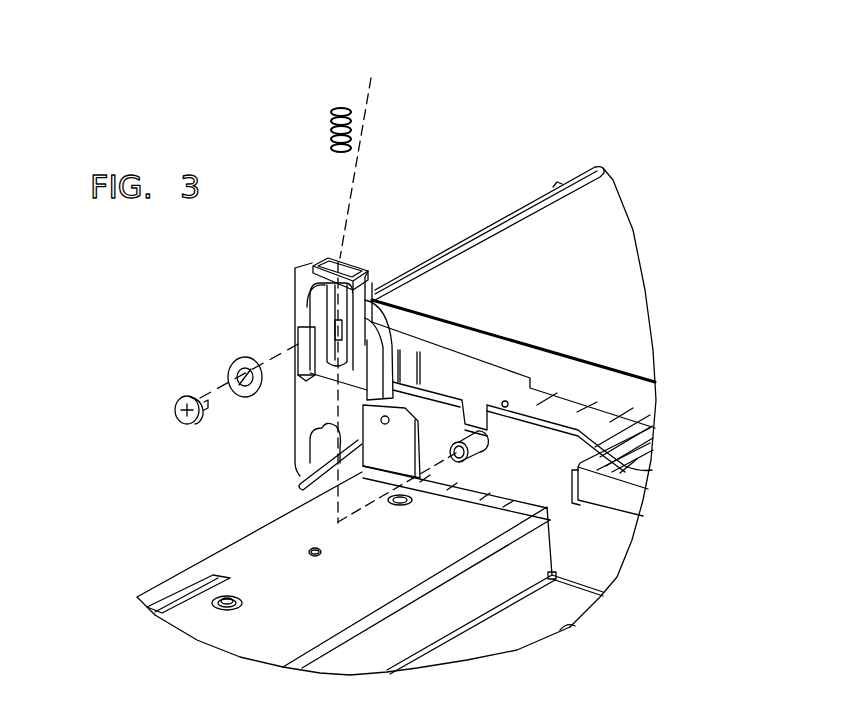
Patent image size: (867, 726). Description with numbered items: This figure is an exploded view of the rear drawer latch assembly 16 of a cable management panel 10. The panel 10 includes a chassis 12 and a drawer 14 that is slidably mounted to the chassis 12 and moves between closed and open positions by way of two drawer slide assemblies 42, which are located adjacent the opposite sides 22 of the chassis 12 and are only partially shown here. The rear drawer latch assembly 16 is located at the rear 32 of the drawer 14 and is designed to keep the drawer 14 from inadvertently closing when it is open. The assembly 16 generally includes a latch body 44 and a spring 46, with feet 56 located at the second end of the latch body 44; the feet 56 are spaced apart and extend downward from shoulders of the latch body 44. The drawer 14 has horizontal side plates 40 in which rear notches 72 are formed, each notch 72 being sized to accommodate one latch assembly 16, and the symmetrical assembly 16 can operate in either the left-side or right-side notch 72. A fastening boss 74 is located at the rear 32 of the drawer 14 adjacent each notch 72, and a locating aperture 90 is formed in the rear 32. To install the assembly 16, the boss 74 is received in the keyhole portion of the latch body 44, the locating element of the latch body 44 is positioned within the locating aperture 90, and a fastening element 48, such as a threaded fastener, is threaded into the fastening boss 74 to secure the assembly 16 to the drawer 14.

The cable management panel 10 is at (672, 162).
The chassis 12 is at (623, 260).
The drawer 14 is at (147, 573).
The rear drawer latch assembly 16 is at (220, 318).
The sides 22 is at (535, 197).
The rear of the drawer 32 is at (617, 533).
The horizontal side plates 40 is at (247, 552).
The drawer slide assemblies 42 is at (627, 430).
The latch body 44 is at (320, 322).
The spring 46 is at (332, 122).
The fastening element 48 is at (180, 397).
The feet 56 is at (376, 396).
The rear notches 72 is at (460, 503).
The fastening boss 74 is at (474, 444).
The locating aperture 90 is at (468, 402).